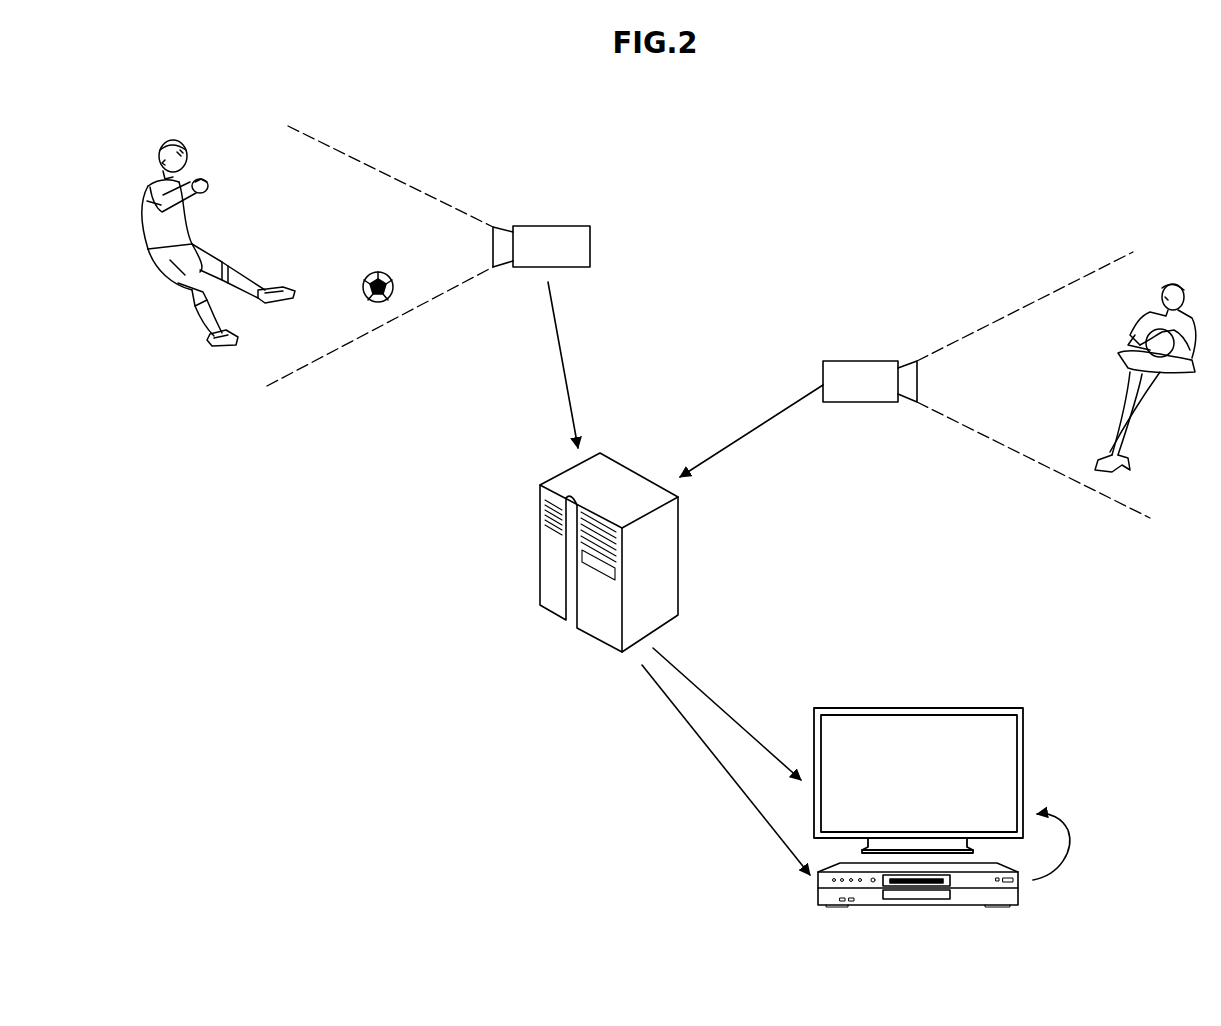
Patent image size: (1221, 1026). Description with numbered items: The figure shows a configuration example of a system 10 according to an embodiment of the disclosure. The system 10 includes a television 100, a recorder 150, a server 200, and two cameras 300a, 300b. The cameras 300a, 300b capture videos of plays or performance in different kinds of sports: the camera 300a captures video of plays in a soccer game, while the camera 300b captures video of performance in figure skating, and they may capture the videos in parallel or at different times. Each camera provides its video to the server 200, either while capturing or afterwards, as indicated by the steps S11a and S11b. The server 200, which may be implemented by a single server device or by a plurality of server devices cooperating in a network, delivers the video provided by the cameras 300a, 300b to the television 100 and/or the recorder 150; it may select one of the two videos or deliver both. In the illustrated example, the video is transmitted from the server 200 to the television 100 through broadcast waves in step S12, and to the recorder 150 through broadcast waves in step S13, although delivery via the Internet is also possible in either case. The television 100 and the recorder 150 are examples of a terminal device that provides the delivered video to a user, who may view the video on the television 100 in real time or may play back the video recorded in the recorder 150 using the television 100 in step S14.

The system 10 is at (812, 572).
The television 100 is at (997, 707).
The recorder 150 is at (1020, 898).
The server 200 is at (538, 550).
The camera 300a is at (552, 226).
The camera 300b is at (861, 361).
The provision of video from camera 300a to server S11a is at (567, 368).
The provision of video from camera 300b to server S11b is at (753, 433).
The transmission of video from server to television S12 is at (715, 702).
The transmission of video from server to recorder S13 is at (702, 747).
The playback of recorded video using television S14 is at (1068, 838).